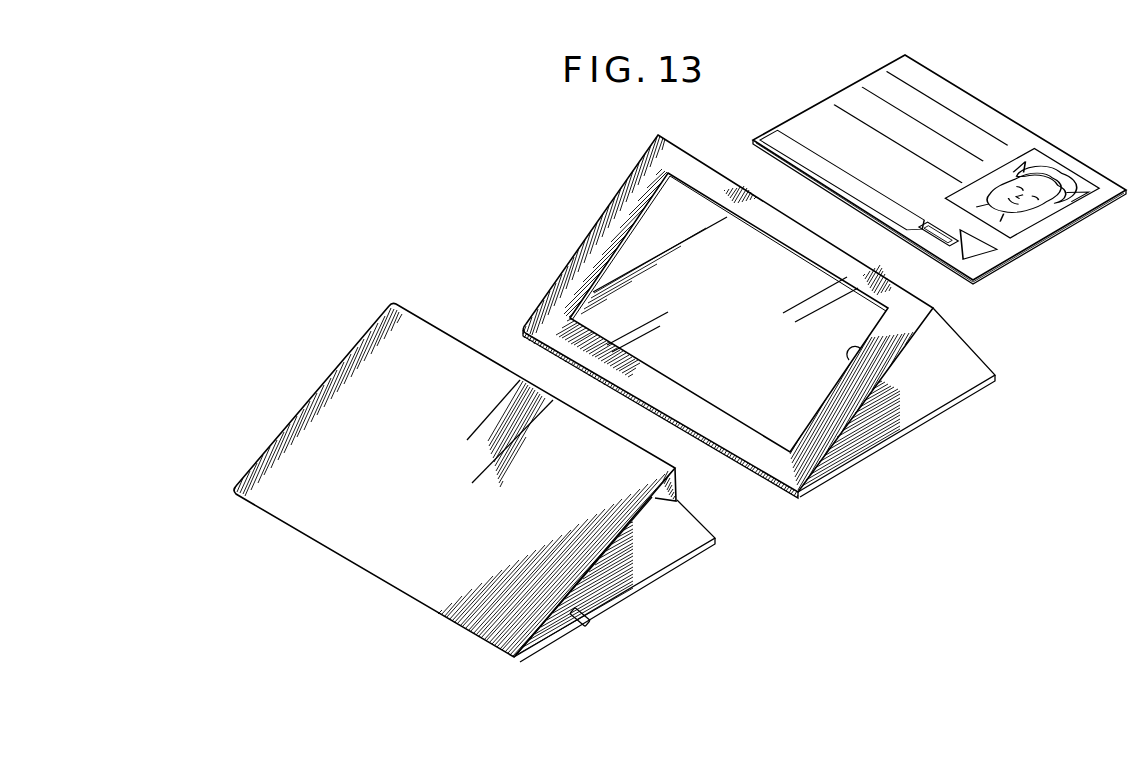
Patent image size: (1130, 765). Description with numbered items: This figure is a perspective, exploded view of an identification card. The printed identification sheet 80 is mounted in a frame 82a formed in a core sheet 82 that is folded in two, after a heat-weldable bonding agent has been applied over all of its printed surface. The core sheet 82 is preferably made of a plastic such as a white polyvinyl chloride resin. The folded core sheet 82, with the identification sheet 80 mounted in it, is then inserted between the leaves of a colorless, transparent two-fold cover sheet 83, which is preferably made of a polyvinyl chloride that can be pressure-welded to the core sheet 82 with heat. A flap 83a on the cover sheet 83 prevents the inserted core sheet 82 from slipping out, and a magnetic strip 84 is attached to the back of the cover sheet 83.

The identification sheet 80 is at (1075, 156).
The core sheet 82 is at (965, 365).
The frame 82a is at (860, 362).
The cover sheet 83 is at (405, 567).
The flap 83a is at (677, 496).
The magnetic strip 84 is at (590, 624).